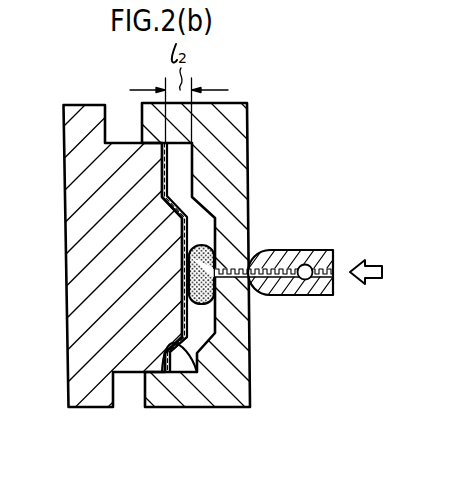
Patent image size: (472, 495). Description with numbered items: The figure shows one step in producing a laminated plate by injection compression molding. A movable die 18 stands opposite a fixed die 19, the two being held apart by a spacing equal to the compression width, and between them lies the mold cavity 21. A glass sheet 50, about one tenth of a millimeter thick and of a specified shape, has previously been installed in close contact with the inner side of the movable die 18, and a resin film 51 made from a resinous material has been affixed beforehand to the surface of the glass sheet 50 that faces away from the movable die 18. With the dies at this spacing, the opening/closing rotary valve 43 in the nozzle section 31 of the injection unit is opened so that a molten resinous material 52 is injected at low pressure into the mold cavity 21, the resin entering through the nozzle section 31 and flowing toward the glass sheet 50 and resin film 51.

The movable die 18 is at (73, 334).
The fixed die 19 is at (224, 190).
The mold cavity 21 is at (181, 158).
The nozzle section 31 is at (290, 250).
The opening/closing rotary valve 43 is at (308, 280).
The glass sheet 50 is at (172, 342).
The resin film 51 is at (197, 355).
The molten resinous material 52 is at (216, 303).